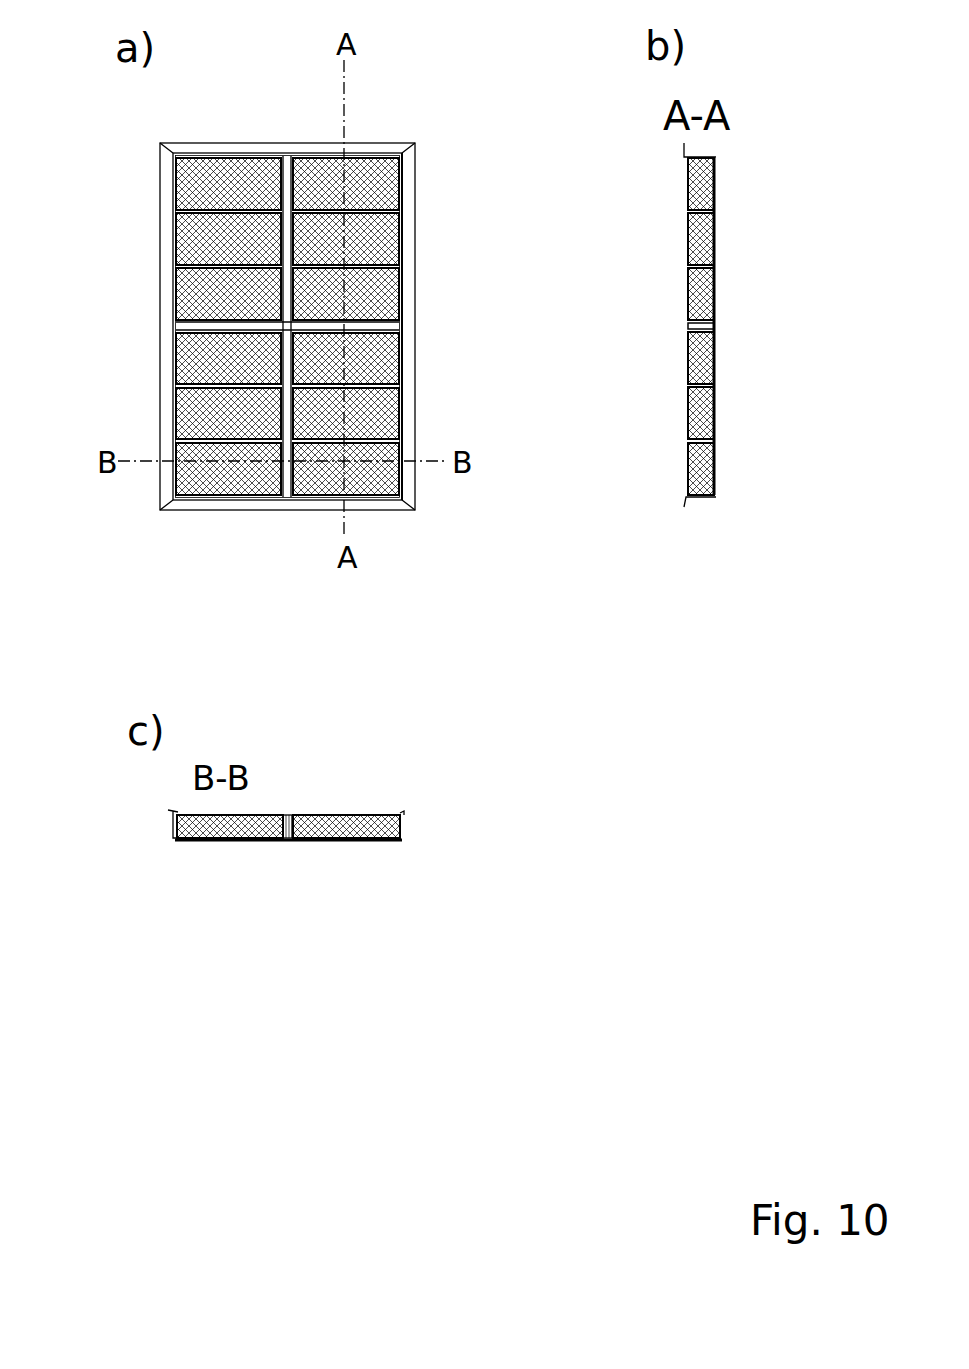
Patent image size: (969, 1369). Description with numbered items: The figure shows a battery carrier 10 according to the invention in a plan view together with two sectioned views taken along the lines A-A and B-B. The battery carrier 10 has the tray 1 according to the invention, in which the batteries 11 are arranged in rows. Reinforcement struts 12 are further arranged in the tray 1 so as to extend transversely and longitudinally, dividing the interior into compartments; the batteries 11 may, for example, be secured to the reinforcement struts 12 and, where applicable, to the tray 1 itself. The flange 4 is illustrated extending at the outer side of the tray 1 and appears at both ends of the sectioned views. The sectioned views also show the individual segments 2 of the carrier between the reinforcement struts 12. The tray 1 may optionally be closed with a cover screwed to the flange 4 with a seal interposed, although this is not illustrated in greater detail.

The battery carrier 10 is at (115, 130).
The tray 1 is at (228, 140).
The panel segment 2 is at (715, 412).
The flange 4 is at (375, 148).
The batteries 11 is at (195, 178).
The reinforcement struts 12 is at (289, 230).